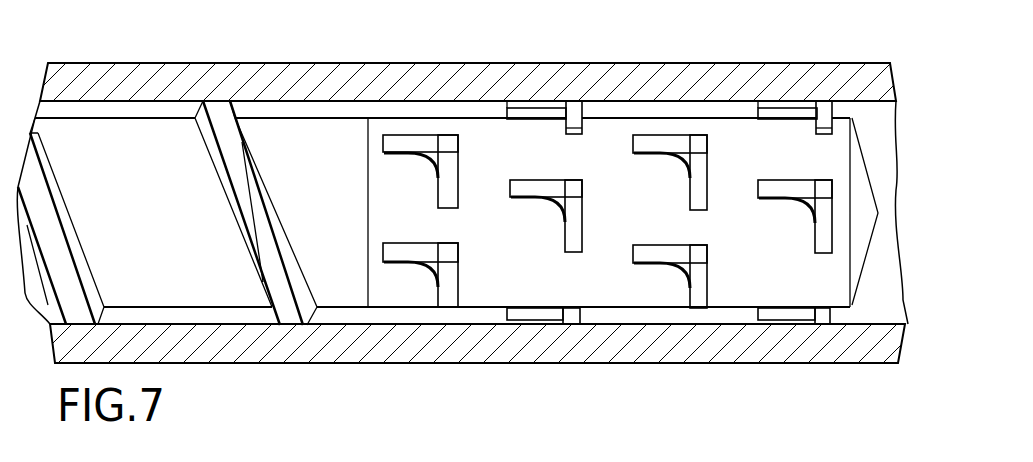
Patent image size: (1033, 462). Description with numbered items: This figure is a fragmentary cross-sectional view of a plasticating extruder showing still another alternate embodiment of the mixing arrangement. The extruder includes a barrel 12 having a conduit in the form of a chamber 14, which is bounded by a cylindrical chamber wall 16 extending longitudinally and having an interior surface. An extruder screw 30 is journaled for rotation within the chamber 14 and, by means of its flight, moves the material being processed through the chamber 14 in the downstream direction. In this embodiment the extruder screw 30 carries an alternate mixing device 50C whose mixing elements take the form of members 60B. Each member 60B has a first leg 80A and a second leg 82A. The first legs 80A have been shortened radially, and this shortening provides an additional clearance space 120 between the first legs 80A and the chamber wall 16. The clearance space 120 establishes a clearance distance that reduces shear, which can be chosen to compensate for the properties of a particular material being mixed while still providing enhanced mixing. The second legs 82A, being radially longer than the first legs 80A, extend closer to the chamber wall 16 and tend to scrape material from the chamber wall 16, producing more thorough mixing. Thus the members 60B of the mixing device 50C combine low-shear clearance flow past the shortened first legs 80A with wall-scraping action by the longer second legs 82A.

The barrel 12 is at (227, 63).
The chamber 14 is at (335, 108).
The chamber wall 16 is at (345, 70).
The extruder screw 30 is at (112, 128).
The mixing device 50C is at (645, 113).
The member 60B is at (555, 175).
The first leg 80A is at (547, 113).
The second leg 82A is at (583, 103).
The clearance space 120 is at (517, 107).